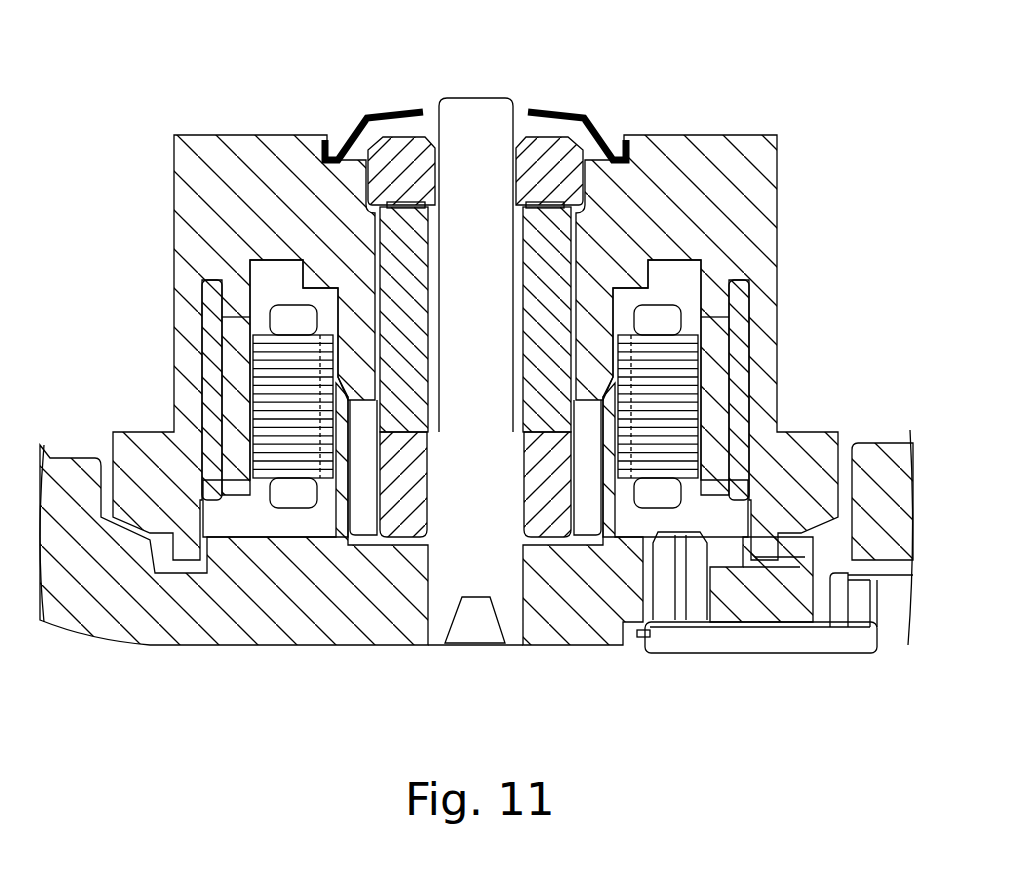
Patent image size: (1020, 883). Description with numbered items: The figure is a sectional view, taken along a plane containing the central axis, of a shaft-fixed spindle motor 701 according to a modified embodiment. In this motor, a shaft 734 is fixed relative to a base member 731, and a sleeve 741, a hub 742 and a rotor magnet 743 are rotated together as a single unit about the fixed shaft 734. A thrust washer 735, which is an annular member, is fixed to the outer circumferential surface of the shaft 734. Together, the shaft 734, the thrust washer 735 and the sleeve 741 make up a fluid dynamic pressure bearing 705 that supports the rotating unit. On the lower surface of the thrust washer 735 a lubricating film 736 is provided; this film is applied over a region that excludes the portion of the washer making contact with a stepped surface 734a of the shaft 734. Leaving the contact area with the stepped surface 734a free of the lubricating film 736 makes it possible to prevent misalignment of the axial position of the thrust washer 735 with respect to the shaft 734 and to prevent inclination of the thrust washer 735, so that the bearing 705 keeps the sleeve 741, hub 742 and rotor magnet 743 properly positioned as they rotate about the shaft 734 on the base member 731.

The spindle motor 701 is at (200, 58).
The fluid dynamic pressure bearing 705 is at (544, 138).
The base member 731 is at (312, 640).
The shaft 734 is at (472, 110).
The stepped surface 734a is at (428, 205).
The thrust washer 735 is at (397, 157).
The lubricating film 736 is at (437, 200).
The sleeve 741 is at (565, 250).
The hub 742 is at (768, 207).
The rotor magnet 743 is at (720, 360).